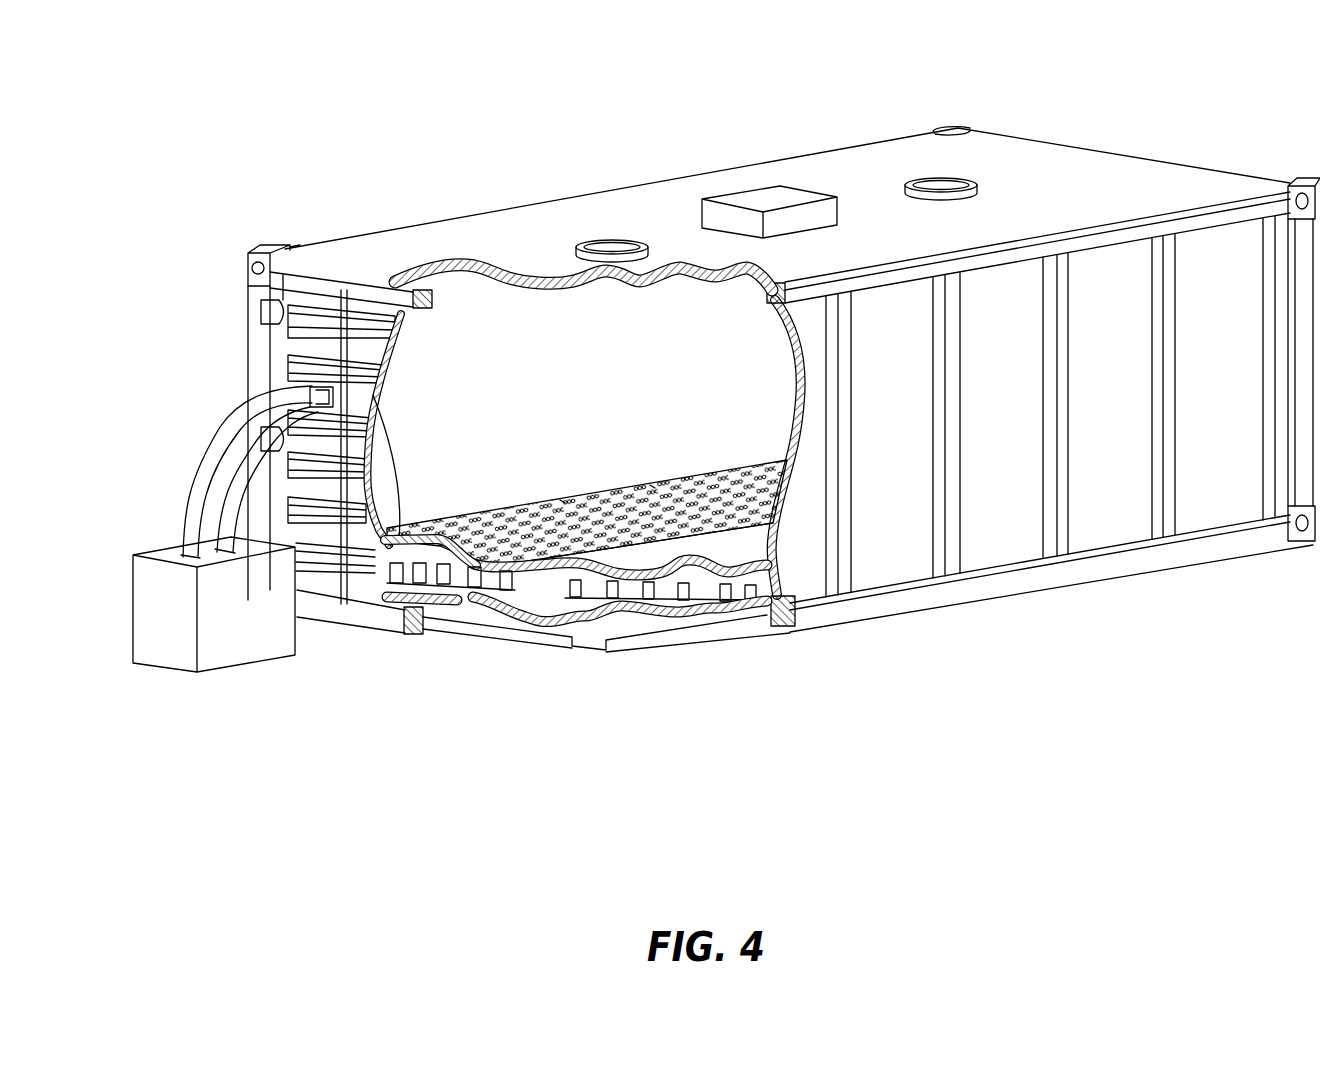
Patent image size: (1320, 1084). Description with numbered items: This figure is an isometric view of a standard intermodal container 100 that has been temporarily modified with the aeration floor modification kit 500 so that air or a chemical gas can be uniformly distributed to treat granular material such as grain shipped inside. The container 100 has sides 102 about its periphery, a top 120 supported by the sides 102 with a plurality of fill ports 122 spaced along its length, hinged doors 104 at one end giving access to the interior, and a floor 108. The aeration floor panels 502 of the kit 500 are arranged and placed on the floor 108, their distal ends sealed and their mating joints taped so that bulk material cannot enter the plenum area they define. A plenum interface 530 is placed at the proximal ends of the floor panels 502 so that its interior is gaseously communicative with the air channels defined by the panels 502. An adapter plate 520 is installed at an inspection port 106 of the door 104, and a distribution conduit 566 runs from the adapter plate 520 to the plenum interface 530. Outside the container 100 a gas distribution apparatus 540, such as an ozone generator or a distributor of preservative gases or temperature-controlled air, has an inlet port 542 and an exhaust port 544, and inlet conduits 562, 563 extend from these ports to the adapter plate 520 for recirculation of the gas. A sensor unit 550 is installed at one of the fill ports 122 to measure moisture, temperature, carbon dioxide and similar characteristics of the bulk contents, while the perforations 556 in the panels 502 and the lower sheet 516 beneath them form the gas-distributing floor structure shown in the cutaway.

The intermodal container 100 is at (291, 112).
The sides 102 is at (1003, 505).
The hinged doors 104 is at (315, 345).
The opening 106 is at (333, 396).
The floor 108 is at (547, 645).
The top 120 is at (430, 250).
The fill ports 122 is at (613, 240).
The aeration floor modification kit 500 is at (600, 495).
The aeration floor panels 502 is at (492, 600).
The lower sheet 516 is at (730, 608).
The adapter plate 520 is at (315, 393).
The plenum interface 530 is at (390, 550).
The gas distribution apparatus 540 is at (250, 610).
The inlet port 542 is at (178, 556).
The exhaust port 544 is at (220, 548).
The sensor unit 550 is at (777, 200).
The perforations 556 is at (616, 492).
The inlet conduit 562 is at (248, 460).
The inlet conduit 563 is at (190, 482).
The distribution conduit 566 is at (393, 482).